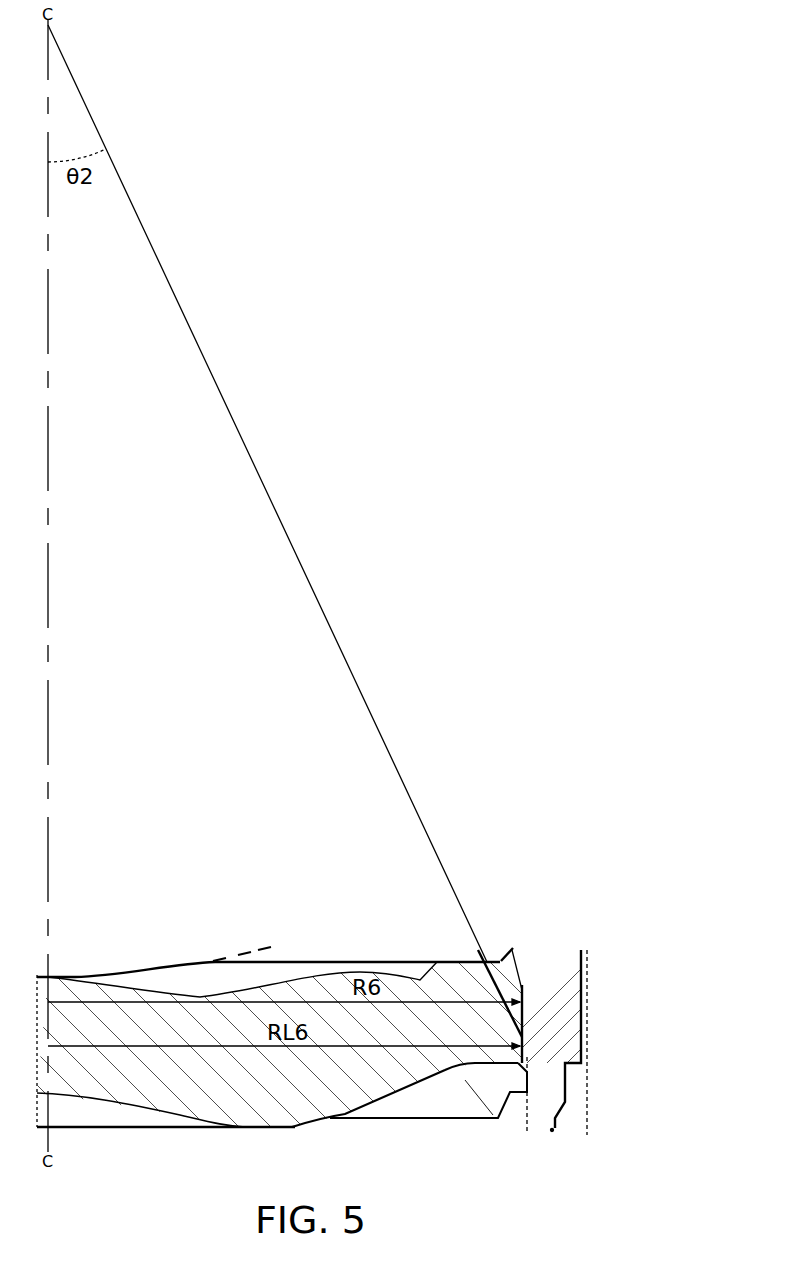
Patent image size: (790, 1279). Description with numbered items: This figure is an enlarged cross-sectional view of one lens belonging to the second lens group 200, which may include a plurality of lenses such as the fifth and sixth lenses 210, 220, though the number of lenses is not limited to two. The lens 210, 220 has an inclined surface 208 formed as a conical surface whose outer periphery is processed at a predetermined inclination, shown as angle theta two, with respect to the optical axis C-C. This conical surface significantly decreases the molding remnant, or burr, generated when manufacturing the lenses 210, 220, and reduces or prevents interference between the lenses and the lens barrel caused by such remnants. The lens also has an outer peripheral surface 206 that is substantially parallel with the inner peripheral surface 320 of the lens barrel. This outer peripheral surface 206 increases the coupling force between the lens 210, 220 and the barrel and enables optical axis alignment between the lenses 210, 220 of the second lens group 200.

The second lens group 200 is at (523, 1017).
The outer peripheral surface 206 is at (522, 1045).
The inclined surface 208 is at (514, 956).
The fifth lens 210 is at (653, 1030).
The sixth lens 220 is at (679, 1015).
The inner peripheral surface 320 is at (522, 990).